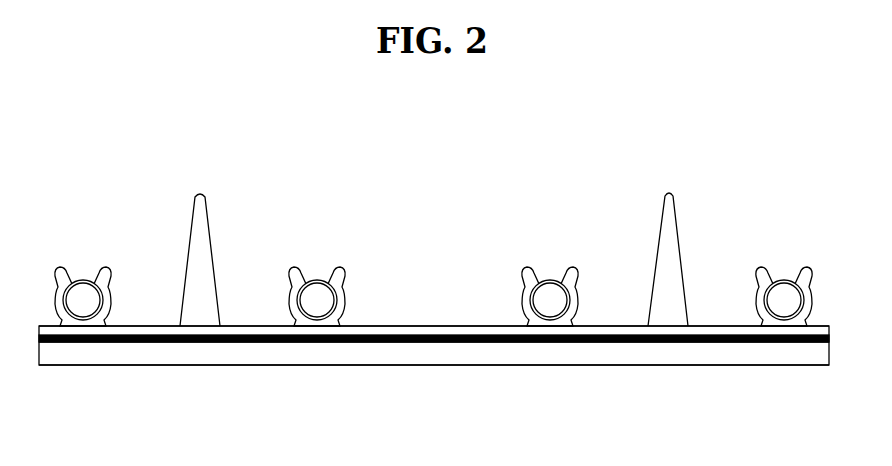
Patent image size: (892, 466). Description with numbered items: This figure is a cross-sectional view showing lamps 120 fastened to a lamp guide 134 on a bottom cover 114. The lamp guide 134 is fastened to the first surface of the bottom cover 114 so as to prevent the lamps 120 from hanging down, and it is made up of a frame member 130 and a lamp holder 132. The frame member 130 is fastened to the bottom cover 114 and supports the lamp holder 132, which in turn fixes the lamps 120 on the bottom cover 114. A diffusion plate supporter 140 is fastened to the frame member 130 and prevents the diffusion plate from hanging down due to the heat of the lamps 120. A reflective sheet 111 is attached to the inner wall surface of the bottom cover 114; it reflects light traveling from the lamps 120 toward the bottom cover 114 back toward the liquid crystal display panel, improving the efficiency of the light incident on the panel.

The reflective sheet 111 is at (484, 343).
The bottom cover 114 is at (390, 350).
The lamp 120 is at (784, 294).
The frame member 130 is at (445, 332).
The lamp holder 132 is at (525, 272).
The lamp guide 134 is at (522, 197).
The diffusion plate supporter 140 is at (665, 193).